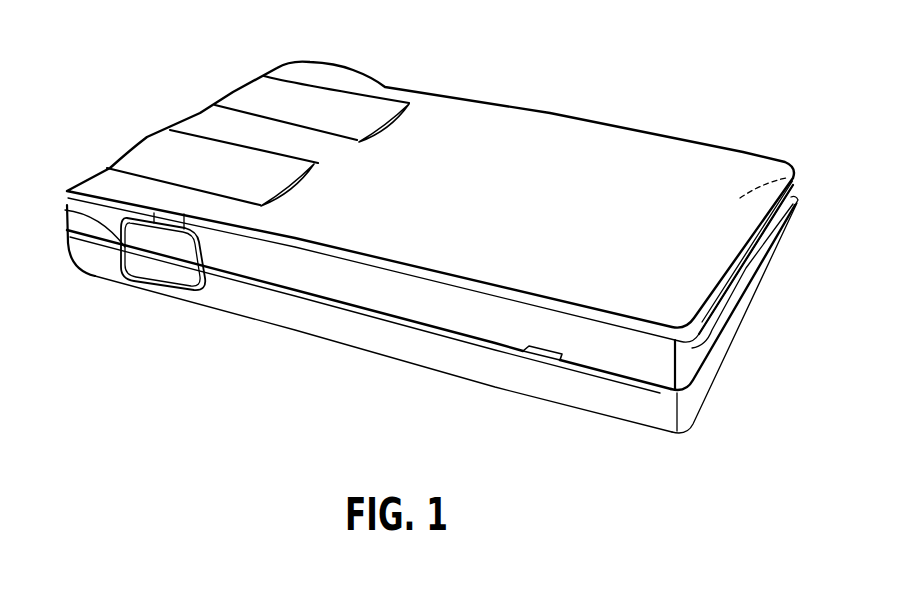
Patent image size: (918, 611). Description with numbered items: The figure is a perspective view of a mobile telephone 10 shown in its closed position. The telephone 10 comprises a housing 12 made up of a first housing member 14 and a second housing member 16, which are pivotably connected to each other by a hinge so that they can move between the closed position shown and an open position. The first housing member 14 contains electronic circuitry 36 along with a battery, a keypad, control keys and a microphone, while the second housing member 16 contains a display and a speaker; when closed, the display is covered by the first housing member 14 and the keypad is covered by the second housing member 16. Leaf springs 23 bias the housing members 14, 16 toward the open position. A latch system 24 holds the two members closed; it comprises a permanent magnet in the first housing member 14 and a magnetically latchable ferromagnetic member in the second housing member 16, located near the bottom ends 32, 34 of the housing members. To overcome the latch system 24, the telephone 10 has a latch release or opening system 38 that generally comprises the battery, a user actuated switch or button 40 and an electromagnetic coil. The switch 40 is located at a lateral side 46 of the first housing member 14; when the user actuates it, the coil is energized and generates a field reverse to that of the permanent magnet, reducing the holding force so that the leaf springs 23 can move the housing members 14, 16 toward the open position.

The telephone 10 is at (704, 40).
The housing 12 is at (765, 165).
The first housing member 14 is at (677, 433).
The second housing member 16 is at (622, 141).
The leaf springs 23 is at (221, 95).
The latch system 24 is at (795, 178).
The bottom end 32 is at (725, 350).
The bottom end 34 is at (746, 268).
The electronic circuitry 36 is at (397, 347).
The opening system 38 is at (65, 210).
The switch 40 is at (160, 258).
The lateral side 46 is at (248, 305).